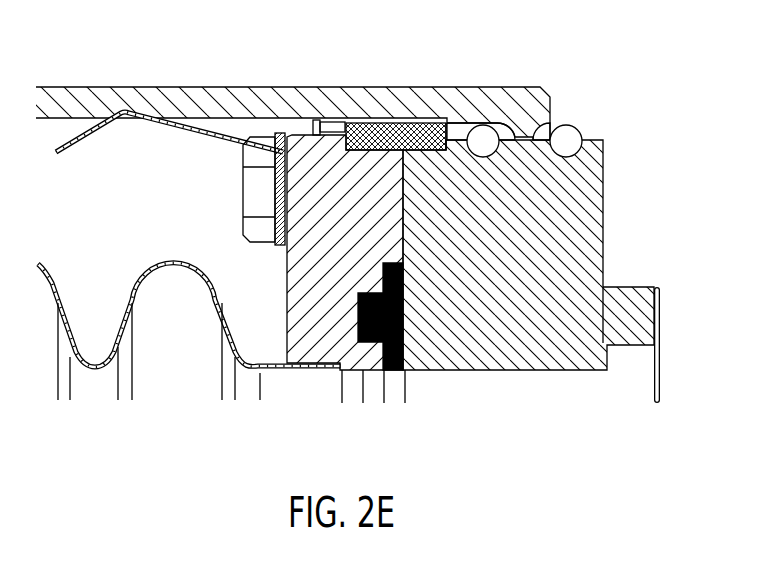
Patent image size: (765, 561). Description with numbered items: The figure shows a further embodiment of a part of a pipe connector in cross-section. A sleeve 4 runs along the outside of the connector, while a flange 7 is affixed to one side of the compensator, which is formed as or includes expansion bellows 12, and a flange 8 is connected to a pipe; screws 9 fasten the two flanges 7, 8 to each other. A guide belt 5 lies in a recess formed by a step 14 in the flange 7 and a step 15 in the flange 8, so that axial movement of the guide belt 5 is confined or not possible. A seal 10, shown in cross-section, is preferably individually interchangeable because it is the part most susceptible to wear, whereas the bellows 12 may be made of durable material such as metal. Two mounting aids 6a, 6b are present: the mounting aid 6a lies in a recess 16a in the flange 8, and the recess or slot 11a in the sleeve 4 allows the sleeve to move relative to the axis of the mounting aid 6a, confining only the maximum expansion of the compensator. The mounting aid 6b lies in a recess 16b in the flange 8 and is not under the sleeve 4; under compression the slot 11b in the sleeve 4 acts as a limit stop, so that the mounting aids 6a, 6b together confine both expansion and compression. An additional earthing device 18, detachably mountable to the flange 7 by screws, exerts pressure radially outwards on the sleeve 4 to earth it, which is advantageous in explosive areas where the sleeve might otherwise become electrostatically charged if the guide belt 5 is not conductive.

The sleeve 4 is at (152, 87).
The guide belt 5 is at (385, 122).
The mounting aid 6a is at (482, 135).
The mounting aid 6b is at (568, 136).
The flange 7 is at (327, 348).
The flange 8 is at (573, 221).
The screw 9 is at (631, 297).
The seal 10 is at (383, 265).
The recess (slot) in the sleeve 11a is at (497, 120).
The slot in the sleeve 11b is at (537, 118).
The expansion bellows 12 is at (176, 262).
The step in the flange 14 is at (356, 118).
The step in flange 15 is at (423, 122).
The recess in the flange 16a is at (513, 168).
The recess in the flange 16b is at (600, 158).
The earthing device 18 is at (80, 133).